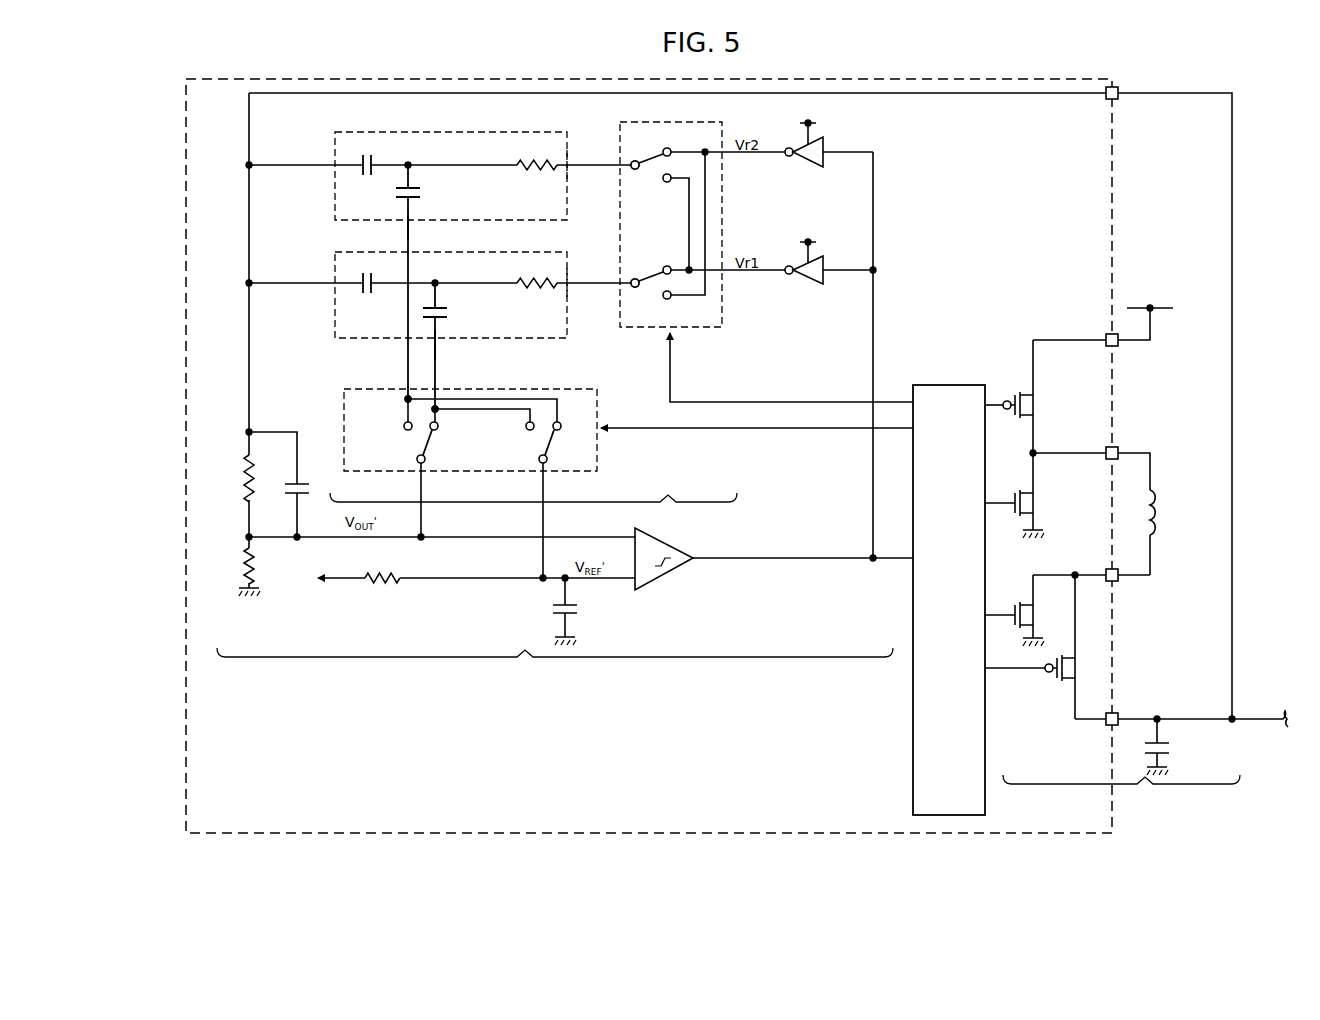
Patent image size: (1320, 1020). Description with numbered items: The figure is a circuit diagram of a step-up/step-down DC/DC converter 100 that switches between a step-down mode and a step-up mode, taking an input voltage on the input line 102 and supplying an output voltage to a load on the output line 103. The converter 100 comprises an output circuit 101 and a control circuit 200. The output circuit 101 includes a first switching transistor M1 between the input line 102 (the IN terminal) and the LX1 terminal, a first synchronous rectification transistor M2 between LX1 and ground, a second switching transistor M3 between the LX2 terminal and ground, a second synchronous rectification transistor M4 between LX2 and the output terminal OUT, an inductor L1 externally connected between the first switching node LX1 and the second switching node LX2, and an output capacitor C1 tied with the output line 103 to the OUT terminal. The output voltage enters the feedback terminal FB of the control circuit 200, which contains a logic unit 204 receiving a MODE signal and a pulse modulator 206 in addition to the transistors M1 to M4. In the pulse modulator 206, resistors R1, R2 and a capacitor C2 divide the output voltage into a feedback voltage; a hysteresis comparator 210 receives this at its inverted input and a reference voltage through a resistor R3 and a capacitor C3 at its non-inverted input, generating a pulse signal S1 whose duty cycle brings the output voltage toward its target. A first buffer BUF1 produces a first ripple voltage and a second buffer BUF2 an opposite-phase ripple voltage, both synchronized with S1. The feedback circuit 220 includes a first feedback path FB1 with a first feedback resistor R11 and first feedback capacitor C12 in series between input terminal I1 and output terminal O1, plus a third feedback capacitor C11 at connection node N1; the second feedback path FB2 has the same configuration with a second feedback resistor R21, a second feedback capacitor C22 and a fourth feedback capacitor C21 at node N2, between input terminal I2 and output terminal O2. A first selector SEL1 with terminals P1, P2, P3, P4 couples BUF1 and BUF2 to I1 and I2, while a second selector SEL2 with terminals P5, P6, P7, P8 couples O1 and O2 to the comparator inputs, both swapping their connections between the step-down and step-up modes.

The step-up/step-down DC/DC converter 100 is at (710, 861).
The output circuit 101 is at (1121, 794).
The input line 102 is at (1162, 304).
The output line 103 is at (1246, 717).
The control circuit 200 is at (186, 812).
The logic unit 204 is at (946, 382).
The pulse modulator 206 is at (555, 667).
The hysteresis comparator 210 is at (683, 577).
The feedback circuit 220 is at (533, 512).
The feedback terminal FB is at (1118, 86).
The first feedback path FB1 is at (335, 271).
The second feedback path FB2 is at (335, 153).
The third feedback capacitor C11 is at (367, 296).
The first feedback capacitor C12 is at (448, 318).
The fourth feedback capacitor C21 is at (367, 178).
The second feedback capacitor C22 is at (422, 198).
The first feedback resistor R11 is at (537, 290).
The second feedback resistor R21 is at (537, 172).
The connection node N1 is at (444, 288).
The node N2 is at (420, 175).
The output terminal of the first feedback path O1 is at (439, 342).
The output terminal of the second feedback path O2 is at (417, 225).
The input terminal of the first feedback path I1 is at (566, 279).
The input terminal of the second feedback path I2 is at (566, 161).
The first selector SEL1 is at (660, 118).
The second selector SEL2 is at (342, 404).
The first terminal P1 is at (712, 274).
The second terminal P2 is at (710, 158).
The third terminal P3 is at (628, 289).
The fourth terminal P4 is at (628, 171).
The fifth terminal P5 is at (439, 394).
The sixth terminal P6 is at (406, 385).
The seventh terminal P7 is at (426, 476).
The eighth terminal P8 is at (551, 474).
The first buffer BUF1 is at (810, 286).
The second buffer BUF2 is at (810, 168).
The pulse signal S1 is at (874, 367).
The mode signal MODE is at (791, 367).
The resistor R1 is at (243, 483).
The resistor R2 is at (243, 560).
The resistor R3 is at (383, 585).
The output capacitor C1 is at (1172, 748).
The capacitor C2 is at (302, 476).
The capacitor C3 is at (552, 609).
The first switching transistor M1 is at (1037, 407).
The first synchronous rectification transistor M2 is at (1037, 505).
The second switching transistor M3 is at (1022, 598).
The second synchronous rectification transistor M4 is at (1062, 683).
The inductor L1 is at (1160, 514).
The input pad IN is at (1137, 352).
The output terminal OUT is at (1116, 714).
The first switching node LX1 is at (1112, 448).
The second switching node LX2 is at (1118, 584).